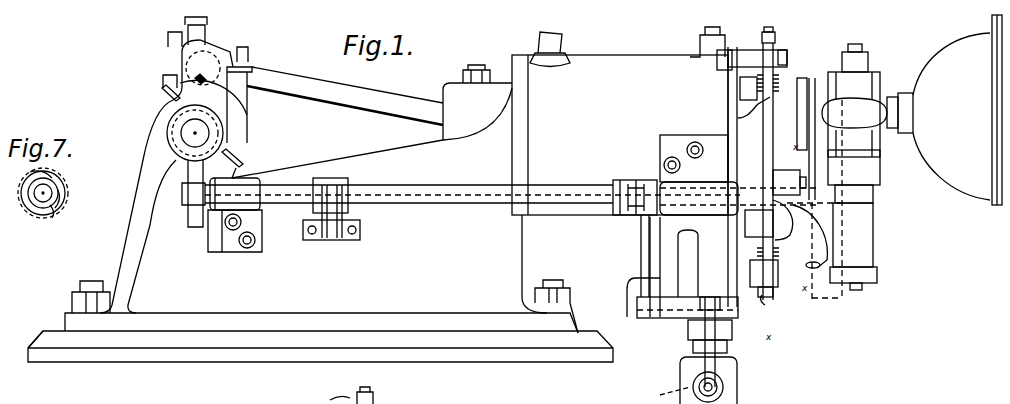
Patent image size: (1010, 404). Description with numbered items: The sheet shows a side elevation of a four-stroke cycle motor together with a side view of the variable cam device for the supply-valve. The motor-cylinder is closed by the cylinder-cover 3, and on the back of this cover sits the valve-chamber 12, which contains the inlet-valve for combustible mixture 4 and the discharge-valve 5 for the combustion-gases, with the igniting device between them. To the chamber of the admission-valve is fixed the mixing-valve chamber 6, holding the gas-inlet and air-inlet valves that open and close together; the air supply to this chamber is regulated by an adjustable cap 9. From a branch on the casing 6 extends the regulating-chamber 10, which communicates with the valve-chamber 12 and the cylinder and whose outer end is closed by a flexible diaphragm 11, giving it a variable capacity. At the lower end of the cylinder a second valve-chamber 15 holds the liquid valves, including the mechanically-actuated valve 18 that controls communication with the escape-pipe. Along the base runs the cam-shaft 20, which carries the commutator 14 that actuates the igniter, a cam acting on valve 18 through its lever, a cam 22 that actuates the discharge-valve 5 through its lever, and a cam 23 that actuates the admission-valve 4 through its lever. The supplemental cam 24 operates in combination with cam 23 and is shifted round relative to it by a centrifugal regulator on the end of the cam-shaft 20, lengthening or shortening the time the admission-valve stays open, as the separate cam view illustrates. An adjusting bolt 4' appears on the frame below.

In FIG. 1, the cylinder-cover 3 is at (728, 52).
In FIG. 1, the inlet-valve for combustible mixture 4 is at (777, 156).
In FIG. 1, the adjusting bolt 4' is at (363, 392).
In FIG. 1, the discharge-valve 5 is at (765, 300).
In FIG. 1, the mixing-valve chamber 6 is at (854, 172).
In FIG. 1, the adjustable cap 9 is at (866, 279).
In FIG. 1, the regulating-chamber 10 is at (951, 116).
In FIG. 1, the flexible diaphragm 11 is at (992, 198).
In FIG. 1, the valve-chamber 12 is at (745, 177).
In FIG. 1, the commutator 14 is at (335, 181).
In FIG. 1, the valve-chamber 15 is at (728, 388).
In FIG. 1, the mechanically-actuated valve 18 is at (663, 395).
In FIG. 7, the cam-shaft 20 is at (44, 196).
In FIG. 1, the cam-shaft 20 is at (427, 200).
In FIG. 7, the cam 22 is at (60, 176).
In FIG. 1, the cam 22 is at (747, 215).
In FIG. 7, the cam 23 is at (78, 195).
In FIG. 1, the cam 23 is at (762, 168).
In FIG. 7, the supplemental cam 24 is at (55, 212).
In FIG. 1, the supplemental cam 24 is at (793, 203).